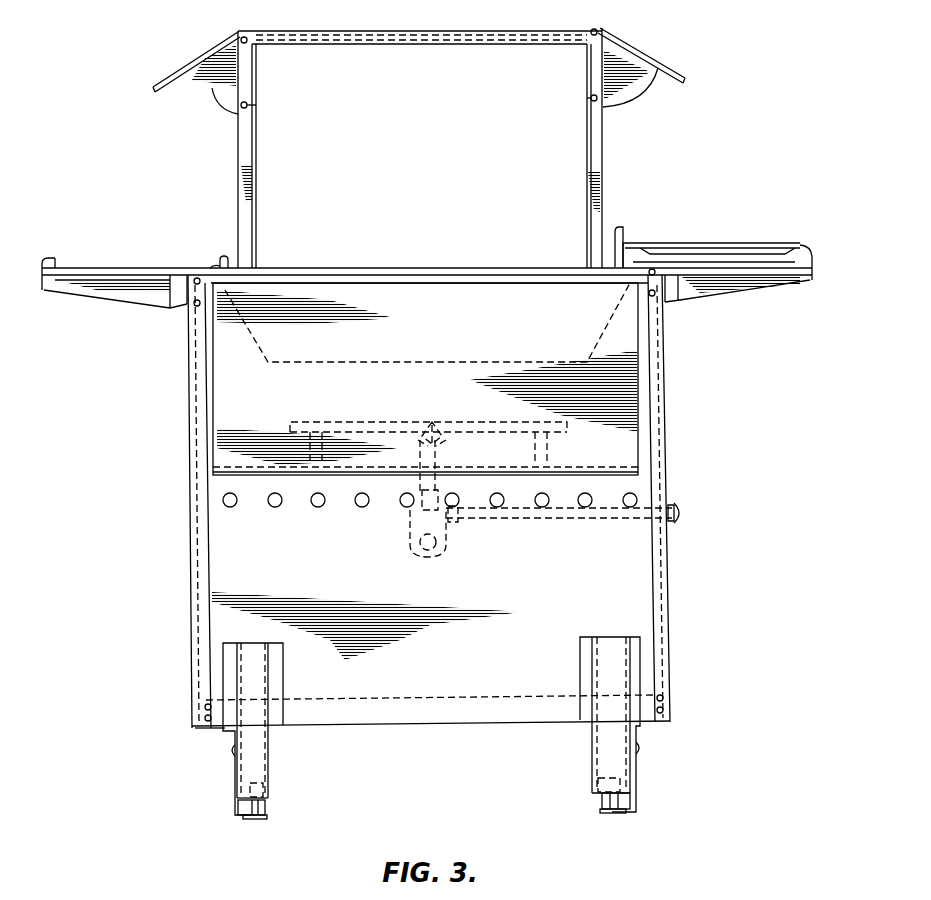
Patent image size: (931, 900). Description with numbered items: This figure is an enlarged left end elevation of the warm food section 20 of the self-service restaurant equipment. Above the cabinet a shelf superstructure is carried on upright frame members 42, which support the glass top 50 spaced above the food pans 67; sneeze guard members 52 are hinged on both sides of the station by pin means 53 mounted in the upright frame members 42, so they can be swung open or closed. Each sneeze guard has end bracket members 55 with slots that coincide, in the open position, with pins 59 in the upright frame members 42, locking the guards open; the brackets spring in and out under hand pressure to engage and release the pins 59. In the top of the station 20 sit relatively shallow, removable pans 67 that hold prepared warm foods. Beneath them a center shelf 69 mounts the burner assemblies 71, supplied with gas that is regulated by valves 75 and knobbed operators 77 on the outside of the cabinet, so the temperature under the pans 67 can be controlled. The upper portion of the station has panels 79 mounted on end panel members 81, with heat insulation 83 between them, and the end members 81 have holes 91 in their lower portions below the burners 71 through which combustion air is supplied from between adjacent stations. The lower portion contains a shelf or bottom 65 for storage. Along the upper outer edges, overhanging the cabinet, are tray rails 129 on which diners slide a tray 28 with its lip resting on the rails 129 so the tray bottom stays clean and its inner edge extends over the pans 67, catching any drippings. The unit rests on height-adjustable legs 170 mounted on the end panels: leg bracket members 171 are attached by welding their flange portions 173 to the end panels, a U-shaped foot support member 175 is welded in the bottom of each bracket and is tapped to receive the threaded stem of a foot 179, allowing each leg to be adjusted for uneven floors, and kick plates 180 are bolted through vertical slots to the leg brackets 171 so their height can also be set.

The warm food section 20 is at (672, 447).
The tray 28 is at (698, 243).
The upright frame members 42 is at (242, 137).
The top 50 is at (450, 28).
The sneeze guard members 52 is at (190, 68).
The pin means 53 is at (242, 37).
The end bracket members 55 is at (212, 92).
The pins 59 is at (257, 105).
The shelf or bottom 65 is at (478, 696).
The pans 67 is at (365, 364).
The center shelf 69 is at (565, 462).
The burner assemblies 71 is at (440, 441).
The valves 75 is at (410, 513).
The knobbed operators 77 is at (681, 506).
The panels 79 is at (240, 387).
The end panel members 81 is at (232, 538).
The heat insulation 83 is at (190, 355).
The holes 91 is at (317, 497).
The rails 129 is at (48, 261).
The legs 170 is at (274, 770).
The leg bracket members 171 is at (255, 745).
The flange portions 173 is at (275, 671).
The foot support member 175 is at (265, 791).
The foot 179 is at (267, 818).
The kick plates 180 is at (235, 769).